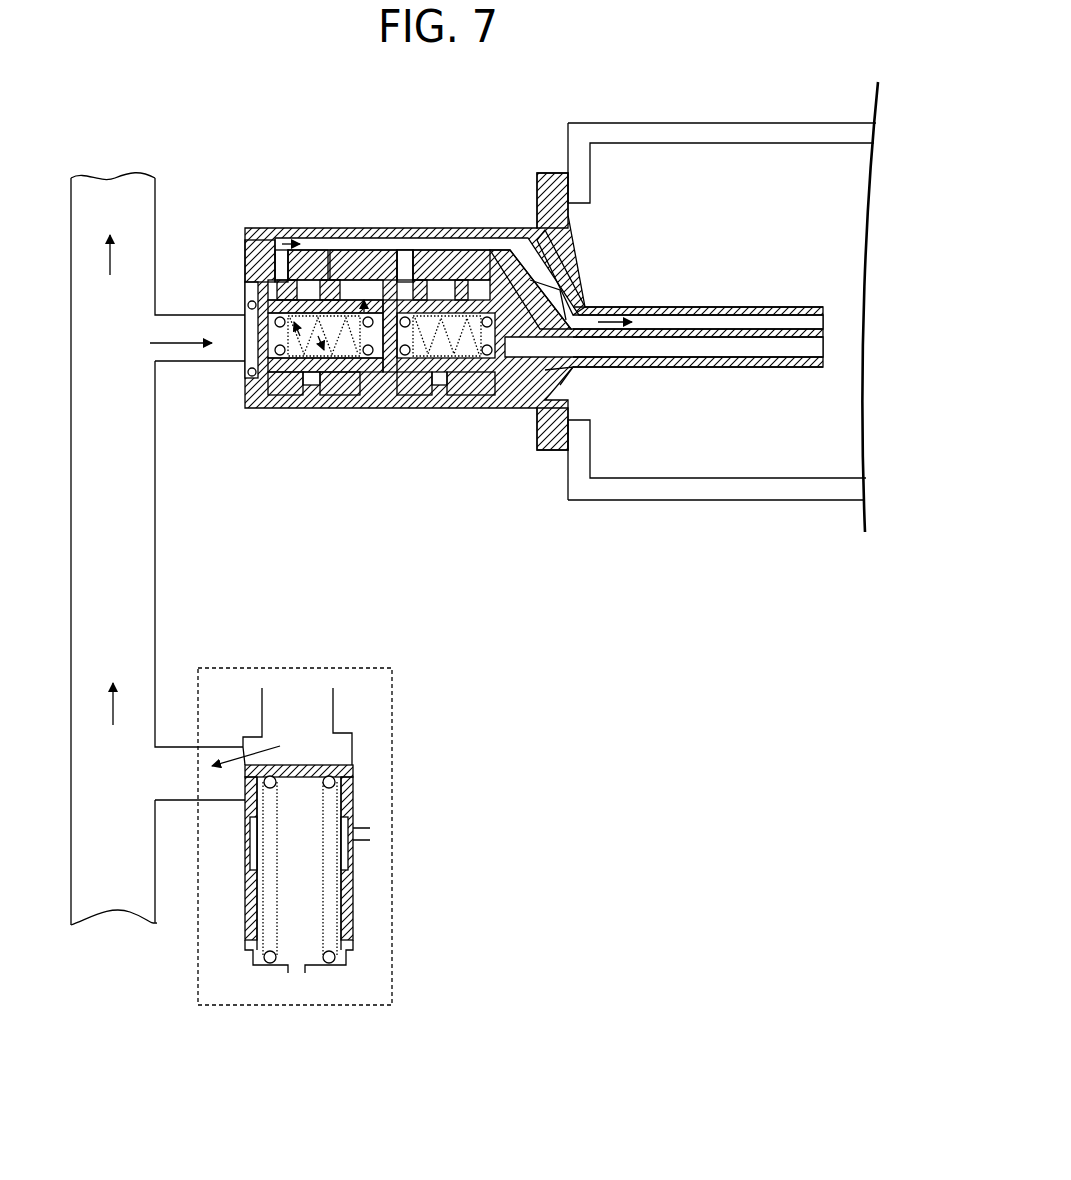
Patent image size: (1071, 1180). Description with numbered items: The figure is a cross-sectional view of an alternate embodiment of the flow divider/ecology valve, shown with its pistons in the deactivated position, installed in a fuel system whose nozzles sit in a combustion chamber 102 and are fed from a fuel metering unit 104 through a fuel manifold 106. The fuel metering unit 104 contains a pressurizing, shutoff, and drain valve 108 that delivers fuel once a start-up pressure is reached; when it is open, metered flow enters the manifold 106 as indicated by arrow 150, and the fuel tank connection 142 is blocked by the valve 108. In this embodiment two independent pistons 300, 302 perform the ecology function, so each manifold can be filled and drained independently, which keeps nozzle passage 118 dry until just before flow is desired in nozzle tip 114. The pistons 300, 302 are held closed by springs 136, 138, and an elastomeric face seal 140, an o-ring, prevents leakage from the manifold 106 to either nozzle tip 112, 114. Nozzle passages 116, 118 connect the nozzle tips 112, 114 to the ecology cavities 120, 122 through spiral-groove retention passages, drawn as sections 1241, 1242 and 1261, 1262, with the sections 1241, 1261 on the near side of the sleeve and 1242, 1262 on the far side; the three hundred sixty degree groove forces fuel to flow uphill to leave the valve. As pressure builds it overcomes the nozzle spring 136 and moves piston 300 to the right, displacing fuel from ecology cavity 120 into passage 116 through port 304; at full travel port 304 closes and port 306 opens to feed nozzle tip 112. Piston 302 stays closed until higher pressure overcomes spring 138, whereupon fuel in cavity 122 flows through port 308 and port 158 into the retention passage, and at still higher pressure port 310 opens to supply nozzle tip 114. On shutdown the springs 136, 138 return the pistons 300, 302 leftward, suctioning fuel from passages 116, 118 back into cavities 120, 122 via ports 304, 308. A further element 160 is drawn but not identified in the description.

The combustion chamber 102 is at (782, 133).
The fuel metering unit 104 is at (341, 836).
The fuel manifold 106 is at (150, 552).
The pressurizing, shutoff, and drain valve 108 is at (355, 777).
The nozzle tip 112 is at (831, 317).
The nozzle tip 114 is at (831, 357).
The nozzle passage 116 is at (537, 215).
The nozzle passage 118 is at (493, 252).
The ecology cavity 120 is at (276, 238).
The ecology cavity 122 is at (487, 408).
The retention passage section 1241 is at (340, 408).
The retention passage section 1242 is at (288, 408).
The retention passage section 1261 is at (475, 408).
The retention passage section 1262 is at (423, 408).
The spring 136 is at (377, 300).
The spring 138 is at (553, 297).
The elastomeric face seal 140 is at (248, 303).
The fuel tank connection 142 is at (368, 833).
The arrow 150 is at (243, 747).
The port 158 is at (463, 250).
The valve body block 160 is at (327, 228).
The piston 300 is at (262, 330).
The piston 302 is at (407, 408).
The port 304 is at (342, 250).
The port 306 is at (307, 250).
The port 308 is at (566, 246).
The port 310 is at (404, 250).